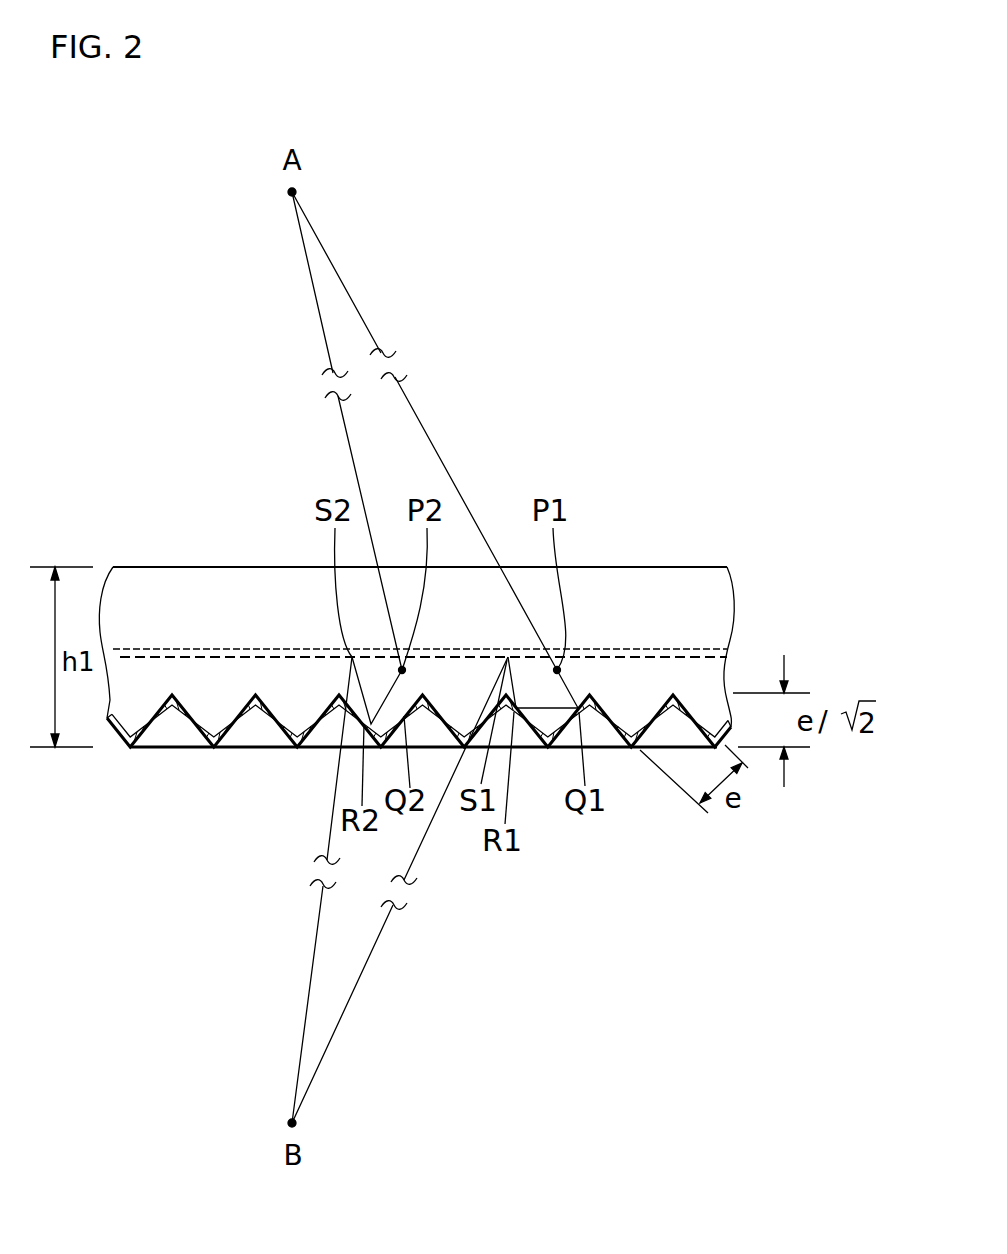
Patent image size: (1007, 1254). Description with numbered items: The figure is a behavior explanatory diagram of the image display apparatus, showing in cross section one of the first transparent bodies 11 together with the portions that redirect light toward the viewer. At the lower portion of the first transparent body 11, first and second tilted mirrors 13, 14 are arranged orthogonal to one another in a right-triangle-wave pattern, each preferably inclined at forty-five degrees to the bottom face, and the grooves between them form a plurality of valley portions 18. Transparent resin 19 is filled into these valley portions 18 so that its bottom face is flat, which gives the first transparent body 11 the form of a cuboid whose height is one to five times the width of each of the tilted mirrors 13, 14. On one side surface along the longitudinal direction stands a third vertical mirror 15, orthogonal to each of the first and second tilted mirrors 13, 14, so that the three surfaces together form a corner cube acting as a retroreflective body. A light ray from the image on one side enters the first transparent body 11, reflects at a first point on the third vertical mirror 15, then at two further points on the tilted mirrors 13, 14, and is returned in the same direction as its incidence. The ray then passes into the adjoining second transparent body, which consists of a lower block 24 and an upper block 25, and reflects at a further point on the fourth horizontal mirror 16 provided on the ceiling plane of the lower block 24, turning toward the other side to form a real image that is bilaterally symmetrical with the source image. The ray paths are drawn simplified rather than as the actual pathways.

The first transparent body 11 is at (620, 567).
The first tilted mirror 13 is at (239, 715).
The second tilted mirror 14 is at (207, 724).
The third vertical mirror 15 is at (686, 603).
The fourth horizontal mirror 16 is at (185, 648).
The valley portion 18 is at (601, 738).
The transparent resin 19 is at (170, 737).
The lower block 24 is at (120, 735).
The upper block 25 is at (127, 590).